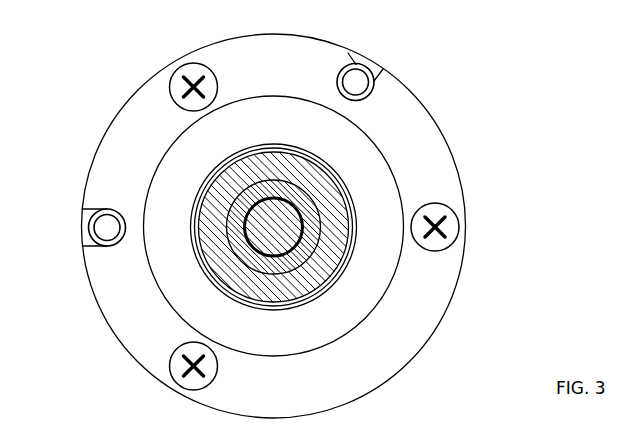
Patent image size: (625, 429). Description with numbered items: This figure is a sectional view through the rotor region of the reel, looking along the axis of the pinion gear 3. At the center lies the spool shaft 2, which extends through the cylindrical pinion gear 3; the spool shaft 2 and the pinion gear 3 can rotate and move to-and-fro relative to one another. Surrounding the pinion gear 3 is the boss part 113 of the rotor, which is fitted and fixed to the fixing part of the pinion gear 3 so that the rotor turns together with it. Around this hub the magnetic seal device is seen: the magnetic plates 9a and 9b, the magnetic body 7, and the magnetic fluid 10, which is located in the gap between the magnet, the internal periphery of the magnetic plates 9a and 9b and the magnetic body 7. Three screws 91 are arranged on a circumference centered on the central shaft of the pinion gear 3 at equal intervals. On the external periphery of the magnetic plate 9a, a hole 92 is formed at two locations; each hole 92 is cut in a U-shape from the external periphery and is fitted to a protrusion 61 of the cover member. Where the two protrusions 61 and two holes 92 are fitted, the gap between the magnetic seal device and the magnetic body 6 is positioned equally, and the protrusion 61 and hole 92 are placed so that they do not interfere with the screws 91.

The spool shaft 2 is at (282, 236).
The pinion gear 3 is at (308, 210).
The boss part 113 is at (317, 182).
The magnetic body 6 is at (198, 165).
The protrusion 61 is at (84, 211).
The hole 92 is at (84, 243).
The screw 91 is at (171, 85).
The magnetic plate 9a is at (128, 131).
The magnetic plate 9b is at (157, 188).
The magnetic fluid 10 is at (190, 258).
The magnetic body 7 is at (205, 277).